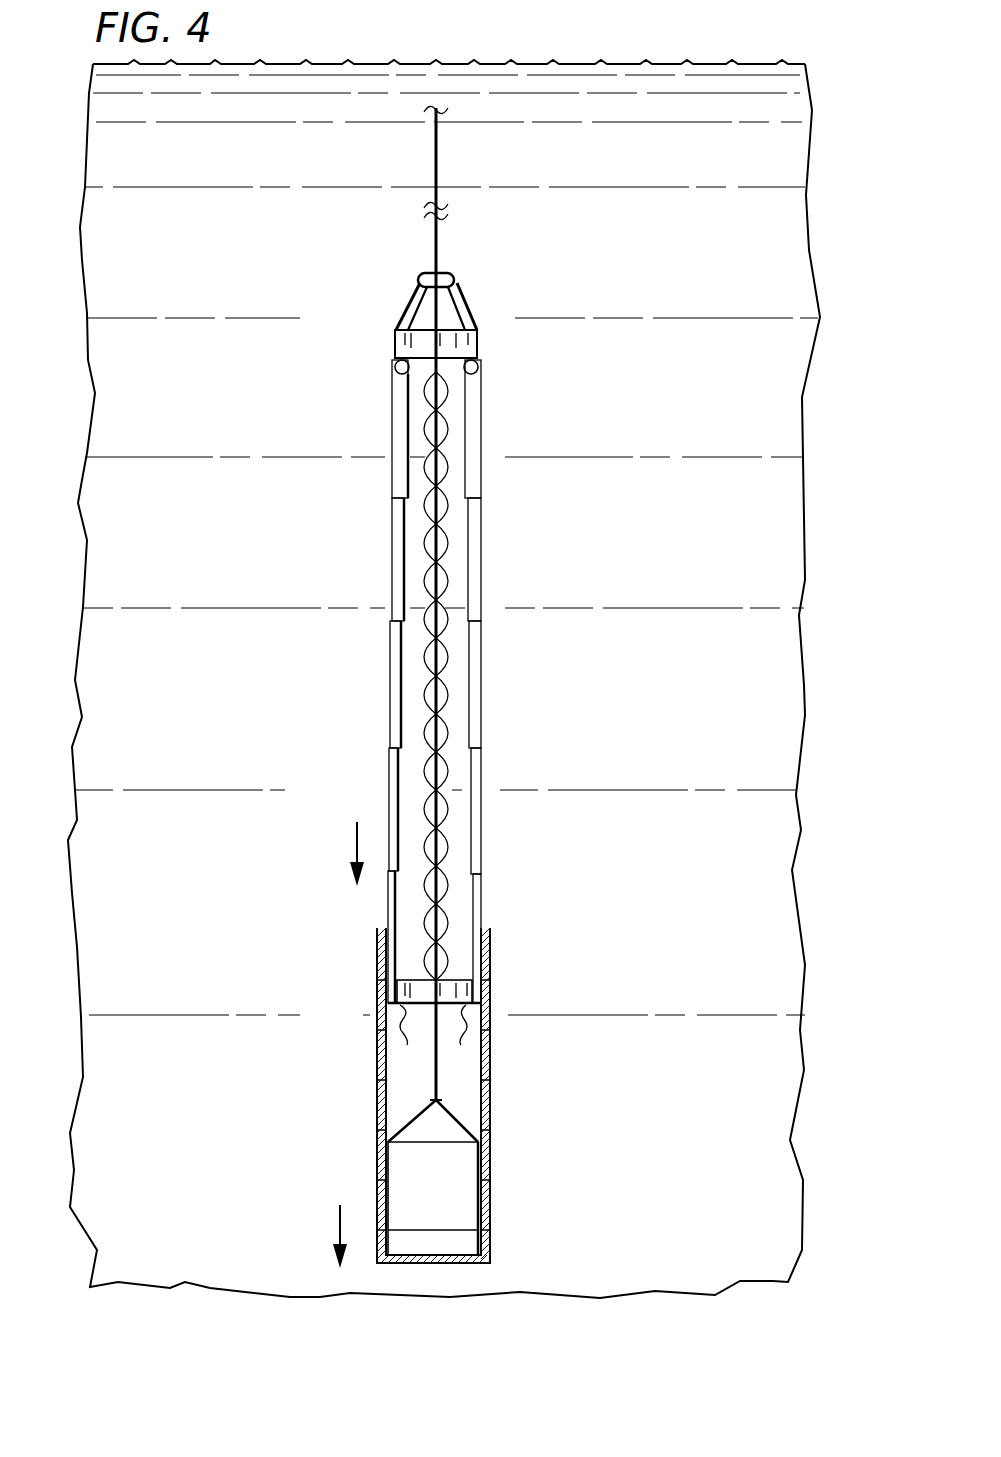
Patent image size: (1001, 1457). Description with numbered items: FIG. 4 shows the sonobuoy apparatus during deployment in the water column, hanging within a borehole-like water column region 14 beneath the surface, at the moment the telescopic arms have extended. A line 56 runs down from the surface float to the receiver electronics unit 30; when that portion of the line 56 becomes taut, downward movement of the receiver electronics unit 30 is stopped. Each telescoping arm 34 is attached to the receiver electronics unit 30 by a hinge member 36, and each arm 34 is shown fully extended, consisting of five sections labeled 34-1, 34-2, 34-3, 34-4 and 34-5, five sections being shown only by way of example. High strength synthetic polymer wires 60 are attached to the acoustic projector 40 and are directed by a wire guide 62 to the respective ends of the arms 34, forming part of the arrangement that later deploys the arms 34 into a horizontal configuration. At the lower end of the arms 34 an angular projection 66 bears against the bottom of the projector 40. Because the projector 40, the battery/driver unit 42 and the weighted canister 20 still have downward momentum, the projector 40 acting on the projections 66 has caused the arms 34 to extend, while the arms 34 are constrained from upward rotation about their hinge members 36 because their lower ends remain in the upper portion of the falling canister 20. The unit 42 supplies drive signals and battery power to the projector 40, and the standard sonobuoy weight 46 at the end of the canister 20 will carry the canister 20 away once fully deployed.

The borehole 14 is at (678, 80).
The line 56 is at (438, 153).
The wire guide 62 is at (445, 278).
The high strength synthetic polymer wires 60 is at (412, 312).
The receiver electronics unit 30 is at (400, 341).
The hinge members 36 is at (396, 368).
The telescoping arms 34 is at (432, 681).
The arm section 34-1 is at (396, 420).
The arm section 34-2 is at (394, 551).
The arm section 34-3 is at (392, 701).
The arm section 34-4 is at (391, 796).
The arm section 34-5 is at (389, 912).
The acoustic projector 40 is at (470, 991).
The angular projection 66 is at (465, 1005).
The canister 20 is at (379, 1069).
The battery/driver unit 42 is at (453, 1199).
The sonobuoy weight 46 is at (465, 1242).